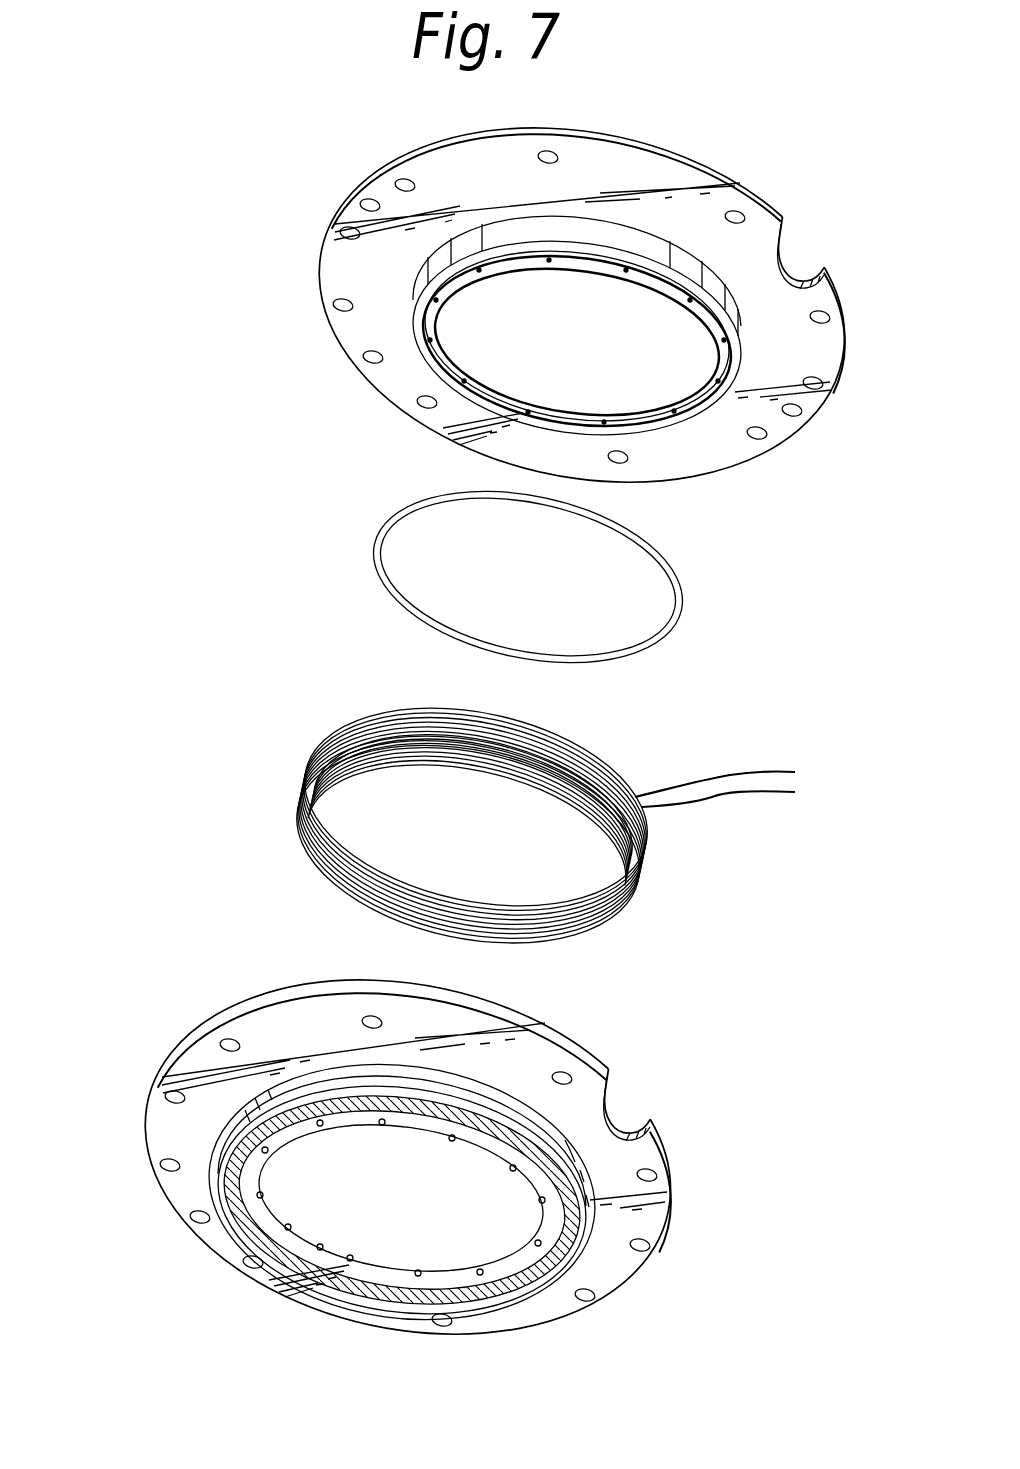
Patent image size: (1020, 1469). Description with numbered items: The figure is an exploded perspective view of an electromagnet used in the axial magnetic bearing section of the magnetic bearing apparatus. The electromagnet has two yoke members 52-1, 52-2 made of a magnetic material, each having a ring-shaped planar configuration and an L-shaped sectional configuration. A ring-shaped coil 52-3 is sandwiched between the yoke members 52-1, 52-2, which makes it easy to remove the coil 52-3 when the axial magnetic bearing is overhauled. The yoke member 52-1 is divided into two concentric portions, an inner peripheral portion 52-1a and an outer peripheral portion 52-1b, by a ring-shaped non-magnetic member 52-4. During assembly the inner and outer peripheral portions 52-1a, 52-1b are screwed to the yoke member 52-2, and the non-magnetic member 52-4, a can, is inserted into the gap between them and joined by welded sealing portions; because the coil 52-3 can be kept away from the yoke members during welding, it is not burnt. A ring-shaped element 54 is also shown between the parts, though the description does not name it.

The yoke member 52-1 is at (427, 1149).
The inner peripheral portion 52-1a is at (243, 1153).
The outer peripheral portion 52-1b is at (220, 1073).
The yoke member 52-2 is at (812, 428).
The coil 52-3 is at (646, 863).
The non-magnetic member 52-4 is at (238, 1188).
The O-ring 54 is at (374, 548).